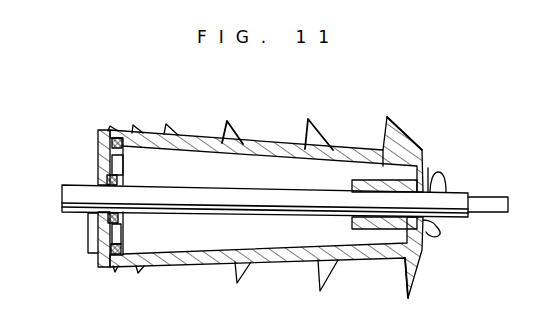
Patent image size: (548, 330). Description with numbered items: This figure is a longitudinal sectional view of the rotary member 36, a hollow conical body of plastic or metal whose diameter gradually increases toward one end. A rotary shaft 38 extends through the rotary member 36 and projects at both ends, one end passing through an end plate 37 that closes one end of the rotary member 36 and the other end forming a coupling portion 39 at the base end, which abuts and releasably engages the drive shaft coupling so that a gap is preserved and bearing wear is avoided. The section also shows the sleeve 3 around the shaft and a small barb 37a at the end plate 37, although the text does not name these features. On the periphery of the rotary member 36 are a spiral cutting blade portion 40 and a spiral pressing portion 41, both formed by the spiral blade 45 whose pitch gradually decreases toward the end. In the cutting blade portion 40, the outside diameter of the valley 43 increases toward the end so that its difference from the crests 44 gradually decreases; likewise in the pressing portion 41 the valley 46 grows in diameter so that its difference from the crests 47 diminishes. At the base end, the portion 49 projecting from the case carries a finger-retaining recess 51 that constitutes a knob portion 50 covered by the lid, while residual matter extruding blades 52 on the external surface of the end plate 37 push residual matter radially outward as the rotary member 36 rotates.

The sleeve 3 is at (460, 193).
The rotary member 36 is at (278, 140).
The end plate 37 is at (100, 232).
The small barb 37a is at (114, 272).
The rotary shaft 38 is at (182, 186).
The coupling portion 39 is at (502, 197).
The spiral cutting blade portion 40 is at (405, 278).
The spiral pressing portion 41 is at (162, 266).
The valley 43 is at (352, 148).
The crests 44 is at (312, 130).
The spiral blade 45 is at (168, 130).
The valley 46 is at (151, 129).
The crests 47 is at (232, 132).
The portion projecting from the case 49 is at (440, 228).
The knob portion 50 is at (441, 174).
The finger-retaining recess 51 is at (428, 178).
The residual matter extruding blades 52 is at (90, 250).